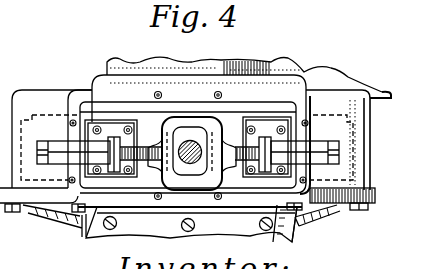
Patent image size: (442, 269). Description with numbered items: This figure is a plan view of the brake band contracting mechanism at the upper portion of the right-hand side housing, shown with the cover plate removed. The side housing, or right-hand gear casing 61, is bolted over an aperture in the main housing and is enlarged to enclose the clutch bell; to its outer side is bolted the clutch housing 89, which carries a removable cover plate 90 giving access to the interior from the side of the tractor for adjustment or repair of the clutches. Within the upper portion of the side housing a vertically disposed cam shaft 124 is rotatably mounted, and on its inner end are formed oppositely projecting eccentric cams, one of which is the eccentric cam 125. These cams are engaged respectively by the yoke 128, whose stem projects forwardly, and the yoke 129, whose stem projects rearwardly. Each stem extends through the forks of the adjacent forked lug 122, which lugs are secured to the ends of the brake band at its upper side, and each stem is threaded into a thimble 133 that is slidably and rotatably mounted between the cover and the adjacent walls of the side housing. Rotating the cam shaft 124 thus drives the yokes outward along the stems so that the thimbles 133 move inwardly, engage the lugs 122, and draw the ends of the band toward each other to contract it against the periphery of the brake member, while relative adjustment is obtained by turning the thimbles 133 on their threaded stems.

The cam shaft 124 is at (168, 137).
The eccentric cam 125 is at (186, 134).
The yoke 128 is at (212, 133).
The thimble 133 is at (352, 58).
The right-hand gear casing 61 is at (368, 147).
The yoke 129 is at (154, 161).
The forked lug 122 is at (112, 168).
The removable cover plate 90 is at (210, 237).
The clutch housing 89 is at (318, 214).